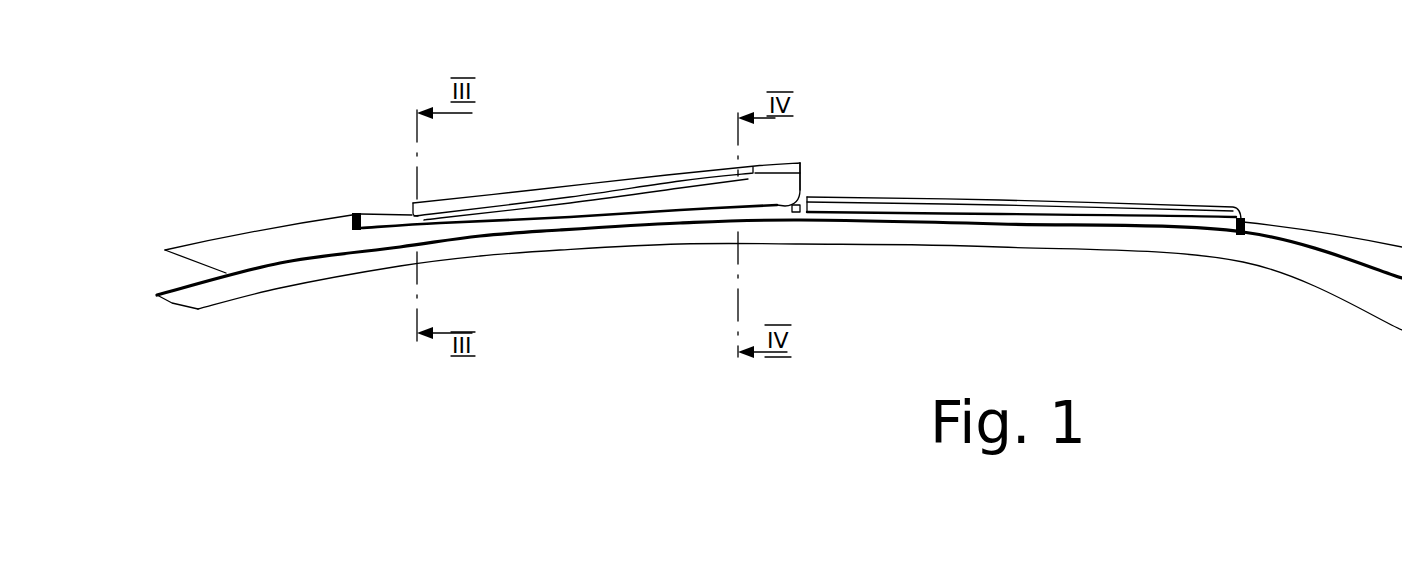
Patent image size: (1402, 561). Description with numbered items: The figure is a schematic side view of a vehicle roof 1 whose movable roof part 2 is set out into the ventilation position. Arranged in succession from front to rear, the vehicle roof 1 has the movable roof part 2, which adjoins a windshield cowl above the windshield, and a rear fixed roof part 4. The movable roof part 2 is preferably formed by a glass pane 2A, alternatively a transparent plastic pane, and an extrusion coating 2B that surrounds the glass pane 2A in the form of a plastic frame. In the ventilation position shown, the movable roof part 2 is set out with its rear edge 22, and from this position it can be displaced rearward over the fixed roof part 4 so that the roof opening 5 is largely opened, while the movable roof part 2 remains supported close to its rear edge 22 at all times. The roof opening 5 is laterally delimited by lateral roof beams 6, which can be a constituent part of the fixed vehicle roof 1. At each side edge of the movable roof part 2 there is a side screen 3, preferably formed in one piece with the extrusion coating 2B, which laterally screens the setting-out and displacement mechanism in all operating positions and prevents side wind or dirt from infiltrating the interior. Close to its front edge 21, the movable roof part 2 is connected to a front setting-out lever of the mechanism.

The vehicle roof 1 is at (277, 242).
The movable roof part 2 is at (643, 170).
The glass pane 2A is at (700, 175).
The extrusion coating 2B is at (777, 168).
The side screen 3 is at (753, 195).
The rear fixed roof part 4 is at (960, 208).
The roof opening 5 is at (797, 213).
The lateral roof beam 6 is at (963, 235).
The front edge 21 is at (367, 222).
The rear edge 22 is at (800, 165).